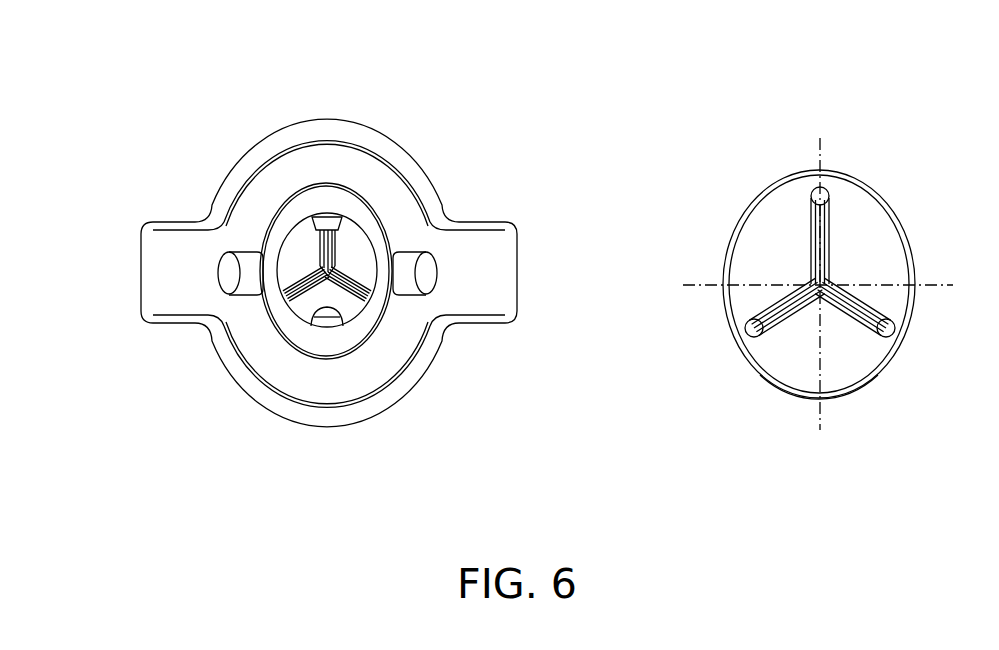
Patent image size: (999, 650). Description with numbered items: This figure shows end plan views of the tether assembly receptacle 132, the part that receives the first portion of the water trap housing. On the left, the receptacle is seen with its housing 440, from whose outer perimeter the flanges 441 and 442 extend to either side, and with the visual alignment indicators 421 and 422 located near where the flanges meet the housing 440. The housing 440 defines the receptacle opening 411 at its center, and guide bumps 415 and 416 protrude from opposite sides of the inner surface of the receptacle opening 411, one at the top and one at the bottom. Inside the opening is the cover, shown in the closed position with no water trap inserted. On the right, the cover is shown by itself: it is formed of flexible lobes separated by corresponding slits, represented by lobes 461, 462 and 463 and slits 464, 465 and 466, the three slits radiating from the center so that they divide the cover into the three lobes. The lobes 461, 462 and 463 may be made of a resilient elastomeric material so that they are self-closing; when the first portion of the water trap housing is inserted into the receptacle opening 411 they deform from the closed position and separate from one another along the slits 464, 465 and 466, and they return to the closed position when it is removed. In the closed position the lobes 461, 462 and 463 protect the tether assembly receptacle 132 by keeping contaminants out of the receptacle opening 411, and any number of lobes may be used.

The tether assembly receptacle 132 is at (152, 125).
The receptacle opening 411 is at (290, 245).
The guide bump 415 is at (328, 223).
The guide bump 416 is at (325, 322).
The visual alignment indicator 421 is at (407, 263).
The visual alignment indicator 422 is at (247, 262).
The housing 440 is at (398, 153).
The flange 441 is at (505, 272).
The flange 442 is at (150, 272).
The lobe 461 is at (863, 207).
The lobe 462 is at (777, 363).
The lobe 463 is at (755, 245).
The slit 464 is at (867, 327).
The slit 465 is at (767, 307).
The slit 466 is at (812, 232).